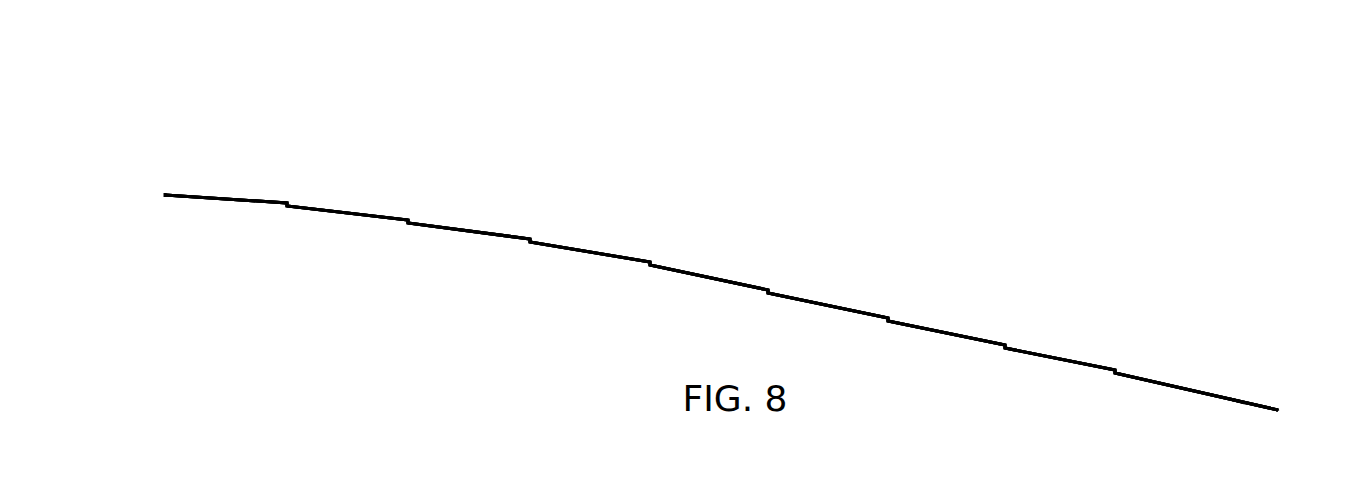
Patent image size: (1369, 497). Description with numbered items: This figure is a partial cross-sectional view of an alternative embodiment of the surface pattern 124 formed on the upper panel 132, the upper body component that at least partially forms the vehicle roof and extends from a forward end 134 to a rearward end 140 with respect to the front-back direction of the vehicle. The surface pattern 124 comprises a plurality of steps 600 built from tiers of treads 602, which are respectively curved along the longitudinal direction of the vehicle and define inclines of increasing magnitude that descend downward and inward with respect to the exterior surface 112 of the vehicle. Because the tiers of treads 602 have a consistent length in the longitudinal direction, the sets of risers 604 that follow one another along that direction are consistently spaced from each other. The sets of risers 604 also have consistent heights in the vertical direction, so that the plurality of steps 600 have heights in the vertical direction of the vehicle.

The exterior surface 112 is at (677, 233).
The surface pattern 124 is at (721, 231).
The upper panel 132 is at (1203, 424).
The forward end 134 is at (107, 157).
The rearward end 140 is at (1315, 385).
The plurality of steps 600 is at (721, 252).
The tiers of treads 602 is at (721, 229).
The sets of risers 604 is at (729, 239).